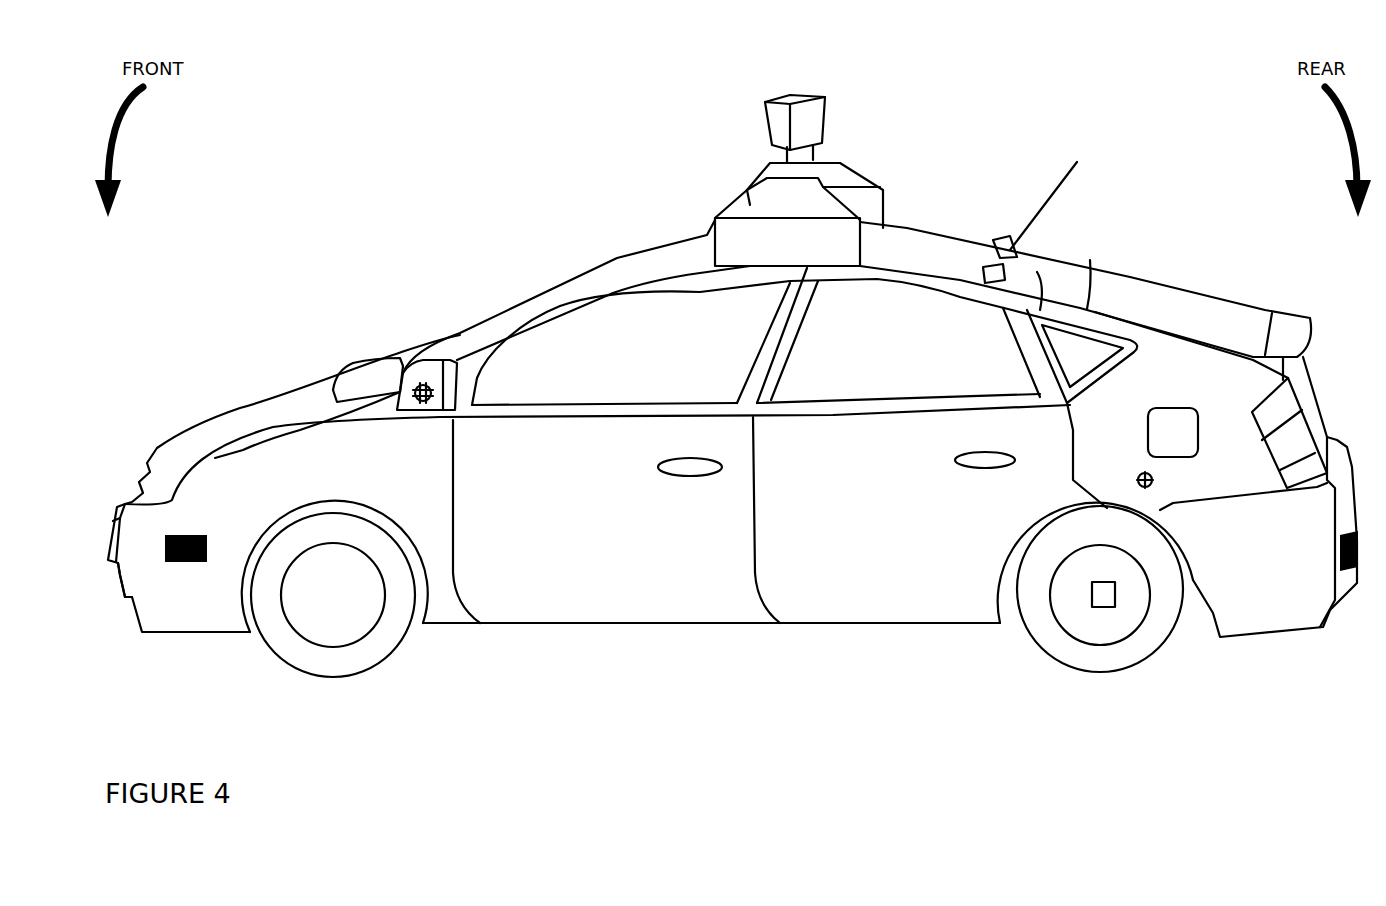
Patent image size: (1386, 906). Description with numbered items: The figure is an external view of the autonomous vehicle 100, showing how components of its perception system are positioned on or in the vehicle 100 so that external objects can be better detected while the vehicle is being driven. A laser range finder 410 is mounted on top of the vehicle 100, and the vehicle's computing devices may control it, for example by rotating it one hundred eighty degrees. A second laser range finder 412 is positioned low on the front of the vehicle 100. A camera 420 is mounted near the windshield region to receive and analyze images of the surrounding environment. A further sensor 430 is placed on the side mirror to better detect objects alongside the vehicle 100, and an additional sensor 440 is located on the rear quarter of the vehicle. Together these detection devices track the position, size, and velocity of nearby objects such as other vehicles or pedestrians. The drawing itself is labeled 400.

The vehicle 100 is at (399, 42).
The vehicle side view 400 is at (203, 770).
The laser range finder 410 is at (773, 112).
The laser range finder 412 is at (122, 593).
The camera 420 is at (597, 290).
The sensor 430 is at (412, 388).
The rear quarter sensor 440 is at (1148, 490).